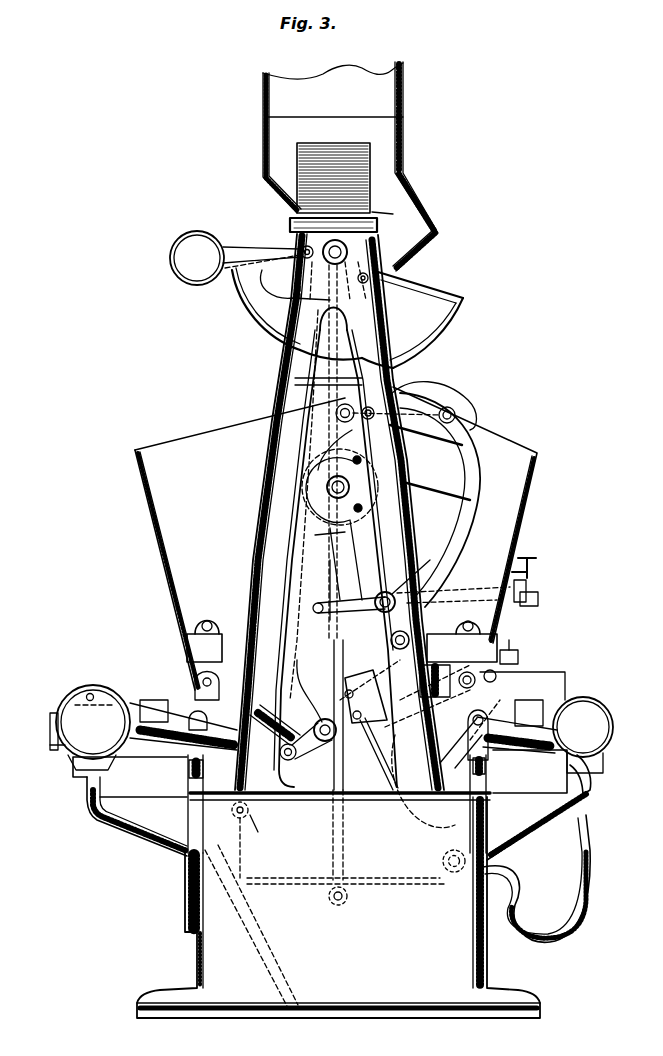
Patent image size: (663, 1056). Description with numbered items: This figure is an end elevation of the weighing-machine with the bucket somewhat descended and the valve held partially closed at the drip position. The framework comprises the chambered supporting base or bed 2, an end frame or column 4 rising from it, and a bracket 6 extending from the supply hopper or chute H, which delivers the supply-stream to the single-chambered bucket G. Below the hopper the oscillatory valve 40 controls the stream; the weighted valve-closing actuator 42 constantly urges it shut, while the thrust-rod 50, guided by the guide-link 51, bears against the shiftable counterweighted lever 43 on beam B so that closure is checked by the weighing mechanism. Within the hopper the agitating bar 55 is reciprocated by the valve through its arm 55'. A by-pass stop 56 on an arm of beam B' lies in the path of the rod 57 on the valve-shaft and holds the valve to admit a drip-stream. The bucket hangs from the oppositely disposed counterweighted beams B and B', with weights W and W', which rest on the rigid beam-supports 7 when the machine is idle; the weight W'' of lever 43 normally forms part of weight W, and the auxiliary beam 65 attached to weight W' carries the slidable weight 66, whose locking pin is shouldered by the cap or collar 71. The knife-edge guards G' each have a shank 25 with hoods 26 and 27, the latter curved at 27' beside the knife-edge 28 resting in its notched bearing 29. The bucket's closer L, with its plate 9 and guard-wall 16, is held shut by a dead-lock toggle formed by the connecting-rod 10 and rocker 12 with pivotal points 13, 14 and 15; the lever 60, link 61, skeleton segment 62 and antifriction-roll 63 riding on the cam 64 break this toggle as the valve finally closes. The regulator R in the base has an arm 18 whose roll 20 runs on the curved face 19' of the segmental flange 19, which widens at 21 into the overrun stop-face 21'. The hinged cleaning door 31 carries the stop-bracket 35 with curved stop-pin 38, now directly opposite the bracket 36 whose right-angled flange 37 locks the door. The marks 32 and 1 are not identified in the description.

The supply hopper or chute H is at (405, 137).
The agitating device 55 is at (333, 187).
The bracket 6 is at (372, 212).
The arm of agitating bar 55' is at (314, 215).
The weighted arm or valve-closing actuator 42 is at (241, 262).
The valve 40 is at (252, 308).
The rod 57 is at (347, 363).
The cam 64 is at (307, 383).
The toggle-joint pivot 13 is at (342, 413).
The open or skeleton segment 62 is at (445, 297).
The link 61 is at (383, 305).
The lever 60 is at (432, 410).
The antifriction-roll 63 is at (400, 443).
The rocker 12 is at (470, 463).
The bucket G is at (240, 544).
The end frame or column 4 is at (278, 460).
The pivotal point 14 is at (325, 488).
The thrust-rod 50 is at (315, 535).
The connecting-rod 10 is at (337, 578).
The guide-link 51 is at (352, 598).
The bracket or arm 36 is at (448, 588).
The curved stop-pin 38 is at (480, 585).
The spring 32 is at (510, 568).
The stop-bracket 35 is at (532, 594).
The right-angled flange 37 is at (530, 608).
The door 31 is at (492, 634).
The screw-threaded cap or collar 71 is at (520, 662).
The slidable weight 66 is at (558, 672).
The curved portion of hood 27' is at (496, 763).
The shank or body portion 25 is at (530, 705).
The knife-edge guard G' is at (339, 699).
The weight for beam B' W' is at (598, 735).
The weight for beam B W is at (88, 723).
The weight of shiftable lever W'' is at (35, 731).
The auxiliary beam 65 is at (52, 750).
The counterweighted beam B is at (130, 777).
The counterweighted beam B' is at (530, 771).
The beam-supports 7 is at (588, 790).
The arm or hood 26 is at (197, 710).
The antifriction-roll 20 is at (195, 820).
The curved face 19' is at (286, 702).
The shiftable counterweighted lever 43 is at (317, 755).
The broadened portion of flange 21 is at (349, 711).
The overrun curved stop-face 21' is at (370, 672).
The by-pass stop 56 is at (385, 788).
The knife-edge 28 is at (400, 660).
The notched bearing 29 is at (460, 768).
The arm or hood 27 is at (498, 735).
The segmental flange or stop 19 is at (269, 818).
The angular arm 18 is at (238, 835).
The guard-wall 16 is at (365, 800).
The pivotal point 15 is at (345, 892).
The closer proper 9 is at (319, 896).
The closer L is at (350, 885).
The regulator R is at (255, 952).
The supporting base or bed 2 is at (483, 943).
The base 1 is at (650, 1046).